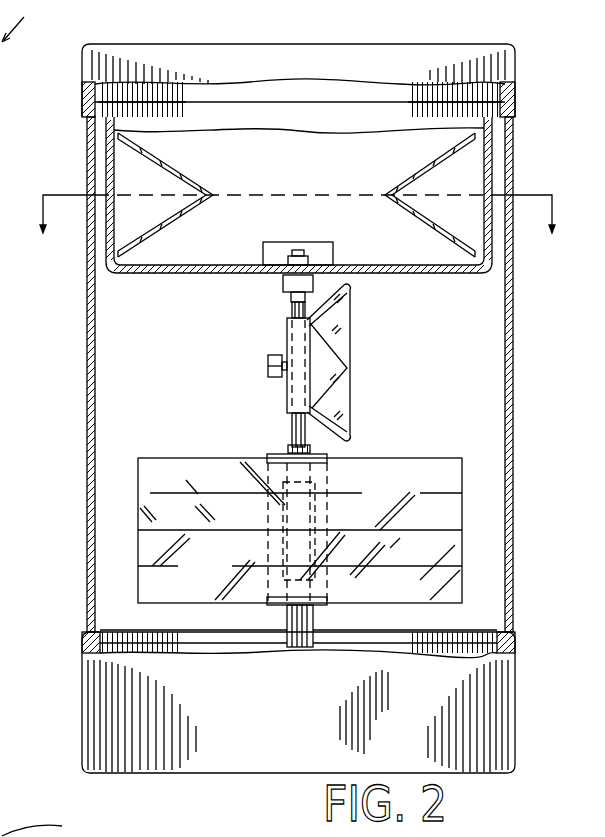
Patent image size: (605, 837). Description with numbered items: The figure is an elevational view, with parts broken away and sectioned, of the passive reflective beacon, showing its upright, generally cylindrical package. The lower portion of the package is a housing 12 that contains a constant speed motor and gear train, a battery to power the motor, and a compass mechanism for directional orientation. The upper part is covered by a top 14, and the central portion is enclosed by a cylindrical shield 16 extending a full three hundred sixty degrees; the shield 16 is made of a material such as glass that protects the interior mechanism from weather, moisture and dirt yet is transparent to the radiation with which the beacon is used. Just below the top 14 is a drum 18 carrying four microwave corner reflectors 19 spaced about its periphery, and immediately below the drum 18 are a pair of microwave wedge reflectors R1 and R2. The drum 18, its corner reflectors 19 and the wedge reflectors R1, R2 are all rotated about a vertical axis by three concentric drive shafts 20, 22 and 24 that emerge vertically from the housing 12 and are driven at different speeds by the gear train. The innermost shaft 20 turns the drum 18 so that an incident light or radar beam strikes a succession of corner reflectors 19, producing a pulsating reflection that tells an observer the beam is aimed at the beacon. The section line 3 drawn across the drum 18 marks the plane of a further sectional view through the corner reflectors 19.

The bottom cap 12 is at (515, 663).
The top cap 14 is at (180, 44).
The cylindrical housing wall 16 is at (87, 465).
The inner container 18 is at (172, 273).
The triangular reflectors 19 is at (156, 225).
The connector block 20 is at (290, 298).
The shaft housing 22 is at (296, 432).
The lower shaft 24 is at (287, 616).
The first reflector R1 is at (349, 327).
The second reflector block R2 is at (360, 460).
The section line 3- 3 is at (298, 224).